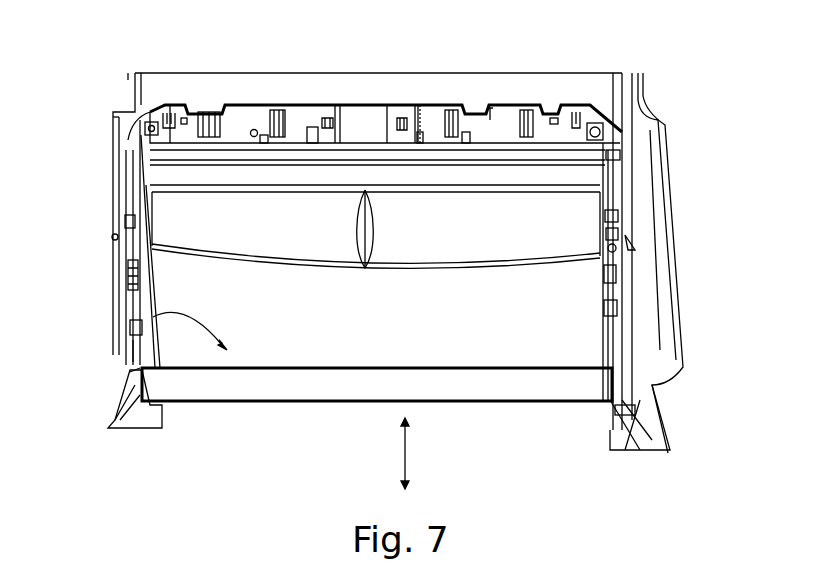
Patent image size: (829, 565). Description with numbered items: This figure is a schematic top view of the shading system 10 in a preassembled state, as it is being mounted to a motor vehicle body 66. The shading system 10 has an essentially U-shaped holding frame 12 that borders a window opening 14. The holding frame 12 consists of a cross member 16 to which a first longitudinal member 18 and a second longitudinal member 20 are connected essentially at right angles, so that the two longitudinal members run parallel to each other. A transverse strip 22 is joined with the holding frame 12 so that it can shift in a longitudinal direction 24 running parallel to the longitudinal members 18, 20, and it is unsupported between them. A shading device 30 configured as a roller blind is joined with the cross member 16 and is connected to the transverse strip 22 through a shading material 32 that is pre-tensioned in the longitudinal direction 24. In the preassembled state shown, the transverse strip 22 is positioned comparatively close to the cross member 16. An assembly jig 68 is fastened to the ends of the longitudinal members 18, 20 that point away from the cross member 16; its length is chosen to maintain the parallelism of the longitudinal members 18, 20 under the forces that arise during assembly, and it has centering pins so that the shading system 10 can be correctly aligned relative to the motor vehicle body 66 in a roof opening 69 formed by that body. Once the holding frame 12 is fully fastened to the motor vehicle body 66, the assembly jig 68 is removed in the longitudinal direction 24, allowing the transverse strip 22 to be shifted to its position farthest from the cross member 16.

The shading system 10 is at (642, 172).
The holding frame 12 is at (498, 133).
The window opening 14 is at (130, 332).
The cross member 16 is at (422, 117).
The first longitudinal member 18 is at (115, 237).
The second longitudinal member 20 is at (645, 238).
The transverse strip 22 is at (577, 213).
The longitudinal direction 24 is at (408, 452).
The shading device 30 is at (300, 157).
The shading material 32 is at (350, 177).
The motor vehicle body 66 is at (202, 82).
The assembly jig 68 is at (288, 388).
The roof opening 69 is at (595, 434).